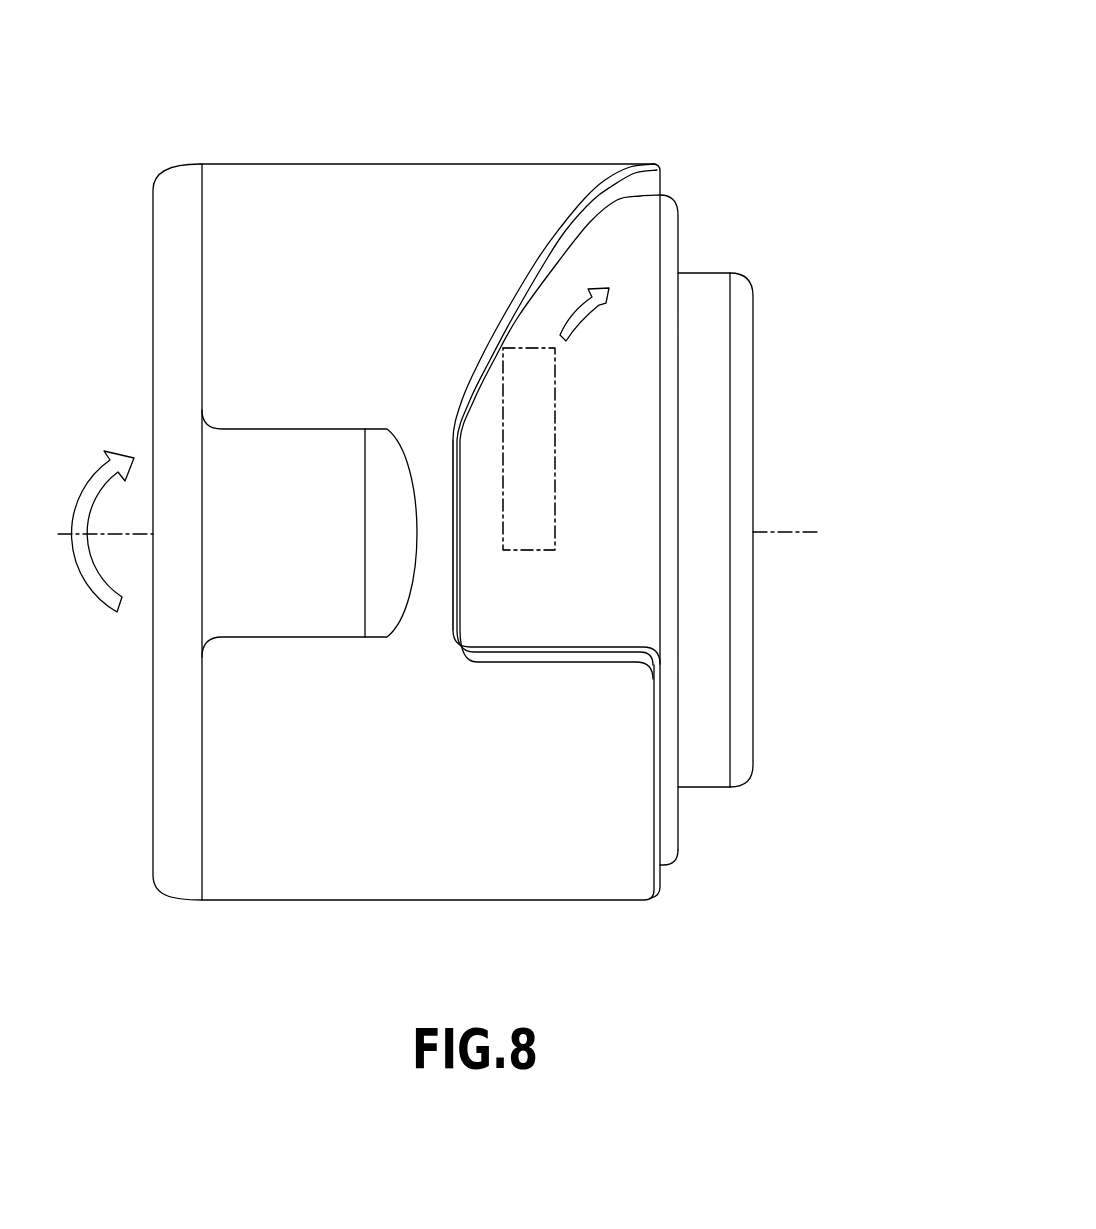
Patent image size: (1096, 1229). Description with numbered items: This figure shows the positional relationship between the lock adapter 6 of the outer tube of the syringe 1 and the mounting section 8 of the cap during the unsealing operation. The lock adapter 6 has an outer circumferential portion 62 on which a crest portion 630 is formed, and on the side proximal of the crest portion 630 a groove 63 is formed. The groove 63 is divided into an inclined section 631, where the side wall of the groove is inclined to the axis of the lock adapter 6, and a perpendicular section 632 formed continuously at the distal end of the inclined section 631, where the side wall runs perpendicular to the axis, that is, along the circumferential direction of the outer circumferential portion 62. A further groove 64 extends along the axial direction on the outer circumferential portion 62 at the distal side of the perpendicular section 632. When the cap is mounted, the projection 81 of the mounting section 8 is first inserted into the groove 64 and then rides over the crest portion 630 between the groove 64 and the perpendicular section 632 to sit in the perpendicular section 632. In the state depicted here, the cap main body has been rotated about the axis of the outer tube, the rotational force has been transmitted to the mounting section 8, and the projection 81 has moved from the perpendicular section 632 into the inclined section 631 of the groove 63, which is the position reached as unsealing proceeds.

The syringe 1 is at (737, 97).
The lock adapter 6 is at (397, 163).
The outer circumferential portion 62 is at (397, 853).
The groove 63 is at (619, 233).
The crest portion 630 is at (427, 605).
The inclined section 631 is at (560, 262).
The perpendicular section 632 is at (461, 565).
The groove 64 is at (270, 457).
The mounting section 8 is at (529, 449).
The projection 81 is at (558, 417).